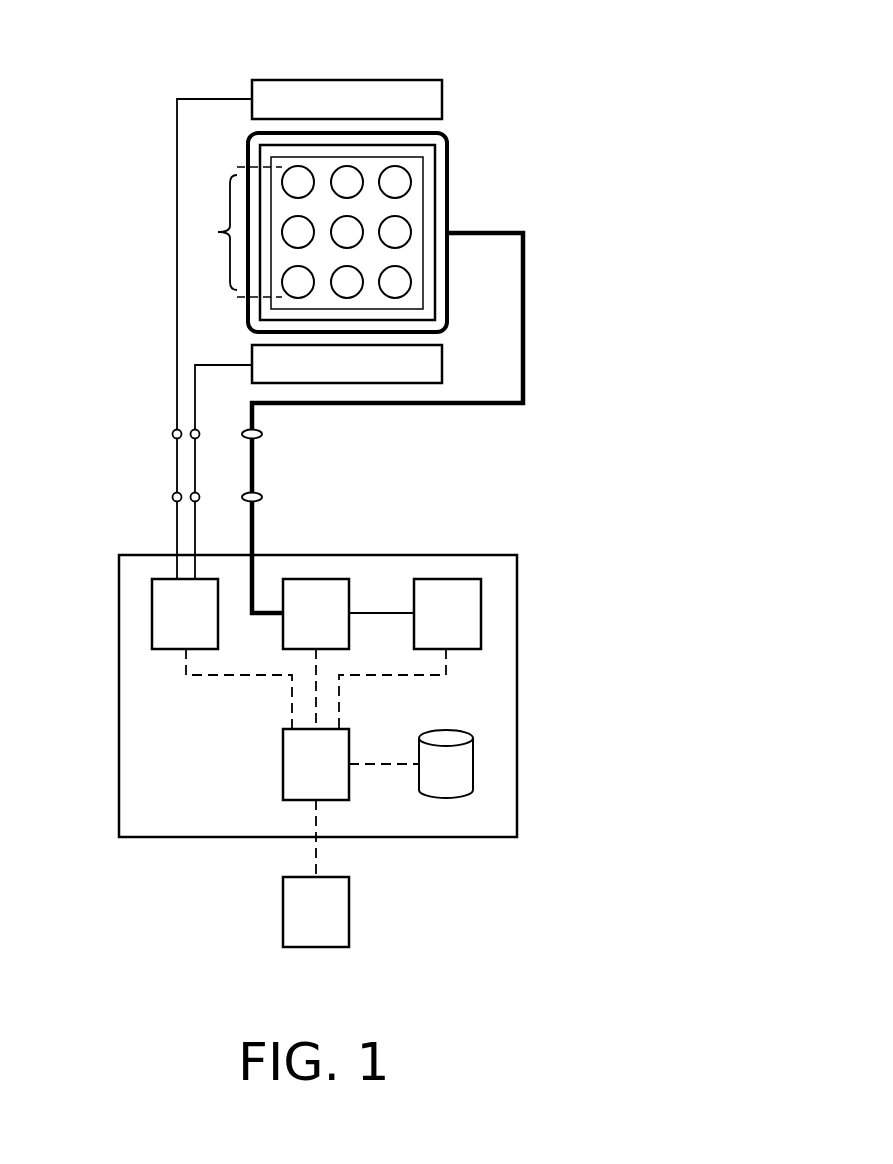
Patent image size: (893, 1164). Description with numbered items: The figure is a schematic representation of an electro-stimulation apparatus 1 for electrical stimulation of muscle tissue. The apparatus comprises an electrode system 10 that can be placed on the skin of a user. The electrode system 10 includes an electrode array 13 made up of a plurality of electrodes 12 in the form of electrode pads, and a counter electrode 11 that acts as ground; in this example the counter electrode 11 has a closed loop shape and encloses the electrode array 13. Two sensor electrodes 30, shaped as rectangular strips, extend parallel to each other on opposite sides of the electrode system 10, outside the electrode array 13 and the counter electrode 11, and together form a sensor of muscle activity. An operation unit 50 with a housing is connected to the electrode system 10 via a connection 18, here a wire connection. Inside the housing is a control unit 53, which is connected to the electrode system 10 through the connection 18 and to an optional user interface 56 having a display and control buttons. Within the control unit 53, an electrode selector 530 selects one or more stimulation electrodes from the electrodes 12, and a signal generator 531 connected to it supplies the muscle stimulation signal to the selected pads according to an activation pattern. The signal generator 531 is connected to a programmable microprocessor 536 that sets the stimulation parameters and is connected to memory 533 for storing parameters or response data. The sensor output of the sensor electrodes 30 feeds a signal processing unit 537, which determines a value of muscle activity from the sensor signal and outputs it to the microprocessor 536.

The electro-stimulation apparatus 1 is at (100, 84).
The electrode system 10 is at (470, 138).
The counter electrode 11 is at (428, 253).
The electrodes 12 is at (400, 290).
The electrode array 13 is at (306, 233).
The connection 18 is at (195, 466).
The sensor electrodes 30 is at (430, 99).
The operation unit 50 is at (470, 532).
The control unit 53 is at (130, 785).
The user interface 56 is at (293, 908).
The electrode selector 530 is at (316, 588).
The signal generator 531 is at (472, 642).
The memory 533 is at (460, 778).
The programmable microprocessor 536 is at (292, 780).
The signal processing unit 537 is at (165, 642).